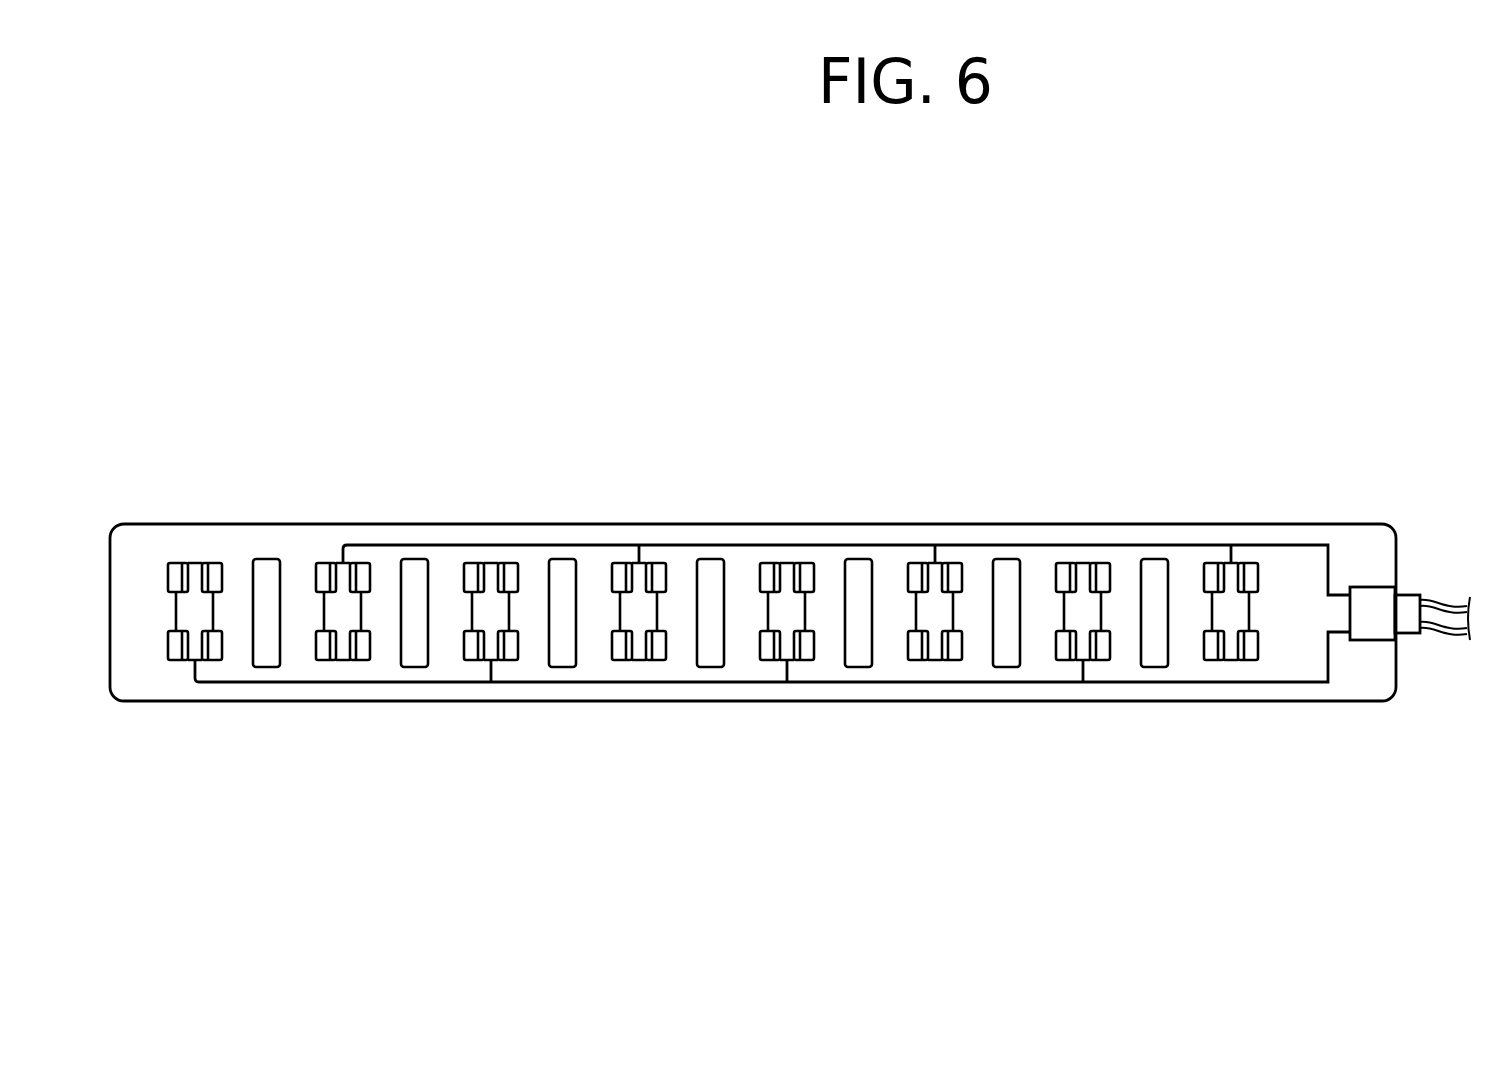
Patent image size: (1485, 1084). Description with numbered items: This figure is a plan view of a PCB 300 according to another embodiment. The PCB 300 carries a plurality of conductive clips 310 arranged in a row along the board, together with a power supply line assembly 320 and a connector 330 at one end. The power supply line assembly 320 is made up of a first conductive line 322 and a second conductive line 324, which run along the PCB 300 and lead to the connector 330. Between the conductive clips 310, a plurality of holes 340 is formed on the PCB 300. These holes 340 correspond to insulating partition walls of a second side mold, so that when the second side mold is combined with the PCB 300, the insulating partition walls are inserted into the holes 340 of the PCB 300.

The PCB 300 is at (809, 491).
The conductive clips 310 is at (953, 651).
The power supply line assembly 320 is at (772, 690).
The first conductive line 322 is at (1327, 595).
The second conductive line 324 is at (1338, 782).
The connector 330 is at (1373, 587).
The holes 340 is at (856, 668).